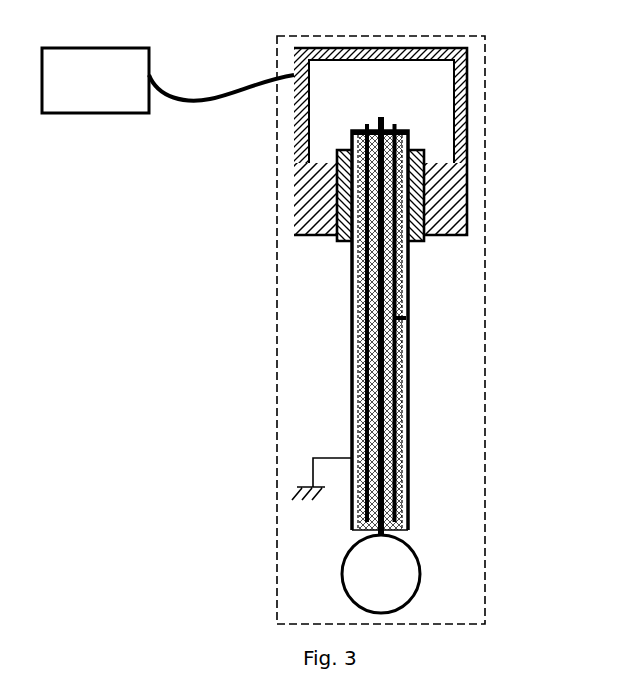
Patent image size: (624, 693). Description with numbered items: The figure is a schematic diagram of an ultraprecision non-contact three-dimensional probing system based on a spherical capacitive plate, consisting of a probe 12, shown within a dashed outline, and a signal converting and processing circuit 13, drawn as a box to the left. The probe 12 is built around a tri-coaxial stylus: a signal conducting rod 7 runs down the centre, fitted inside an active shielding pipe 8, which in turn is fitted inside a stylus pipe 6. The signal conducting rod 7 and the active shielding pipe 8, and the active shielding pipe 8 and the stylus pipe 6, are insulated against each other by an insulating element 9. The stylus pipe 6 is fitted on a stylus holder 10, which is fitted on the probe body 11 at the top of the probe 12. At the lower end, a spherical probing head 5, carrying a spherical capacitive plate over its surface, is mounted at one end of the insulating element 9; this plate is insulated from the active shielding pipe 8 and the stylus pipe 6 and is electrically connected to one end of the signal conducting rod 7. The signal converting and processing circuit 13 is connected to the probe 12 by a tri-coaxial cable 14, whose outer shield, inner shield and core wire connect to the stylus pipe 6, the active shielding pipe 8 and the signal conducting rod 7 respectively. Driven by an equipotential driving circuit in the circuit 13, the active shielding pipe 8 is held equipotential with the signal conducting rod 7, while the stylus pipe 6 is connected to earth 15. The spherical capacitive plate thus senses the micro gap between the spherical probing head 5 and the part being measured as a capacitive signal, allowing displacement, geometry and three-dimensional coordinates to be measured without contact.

The spherical probing head 5 is at (396, 557).
The stylus pipe 6 is at (409, 467).
The signal conducting rod 7 is at (383, 415).
The active shielding pipe 8 is at (409, 348).
The insulating element 9 is at (407, 305).
The stylus holder 10 is at (416, 203).
The probe body 11 is at (462, 123).
The probe 12 is at (477, 50).
The signal converting and processing circuit 13 is at (88, 58).
The tri-coaxial cable 14 is at (189, 97).
The earth 15 is at (308, 488).